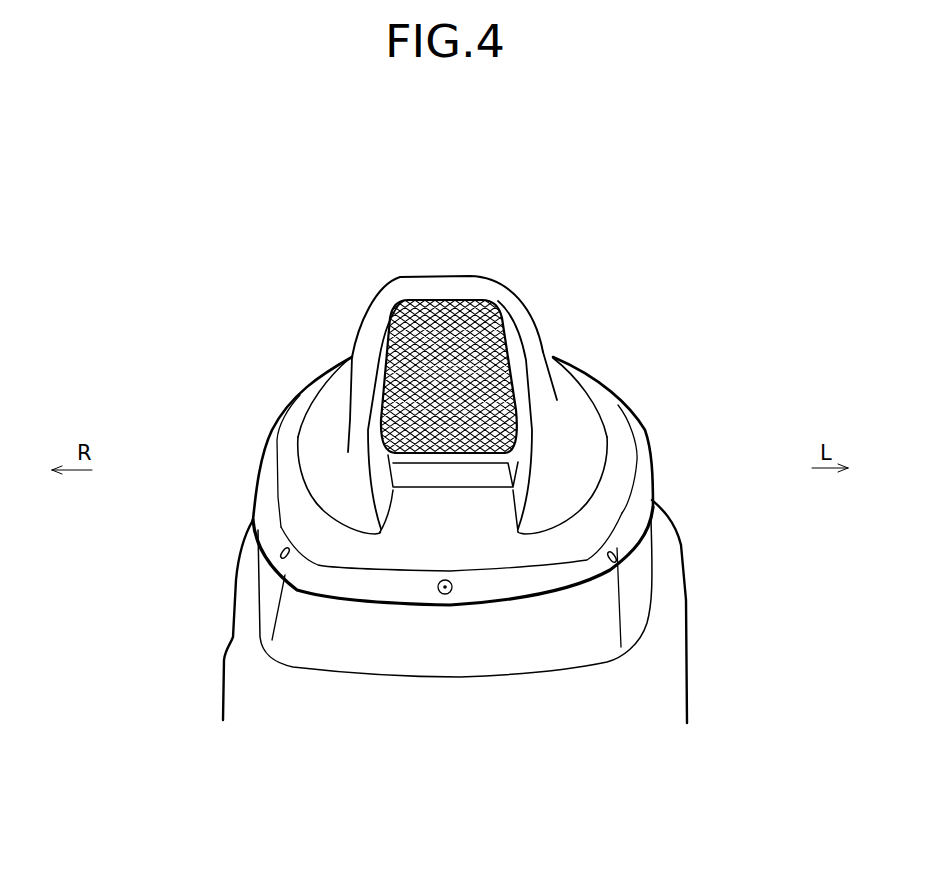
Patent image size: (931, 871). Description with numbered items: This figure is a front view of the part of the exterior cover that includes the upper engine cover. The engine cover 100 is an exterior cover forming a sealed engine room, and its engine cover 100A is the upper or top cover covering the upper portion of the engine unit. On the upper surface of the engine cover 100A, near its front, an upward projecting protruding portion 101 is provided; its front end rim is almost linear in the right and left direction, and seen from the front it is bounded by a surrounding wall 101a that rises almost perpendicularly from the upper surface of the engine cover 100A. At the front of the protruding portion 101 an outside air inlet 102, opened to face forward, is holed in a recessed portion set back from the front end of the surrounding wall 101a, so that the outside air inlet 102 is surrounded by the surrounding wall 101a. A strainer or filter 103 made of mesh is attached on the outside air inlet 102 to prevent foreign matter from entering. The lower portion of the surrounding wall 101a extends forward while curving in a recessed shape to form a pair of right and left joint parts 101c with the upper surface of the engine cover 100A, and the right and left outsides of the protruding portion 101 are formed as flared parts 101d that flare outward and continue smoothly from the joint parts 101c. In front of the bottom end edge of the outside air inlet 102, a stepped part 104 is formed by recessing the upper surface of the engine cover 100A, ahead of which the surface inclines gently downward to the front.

The engine cover 100 is at (665, 713).
The upper engine cover 100A is at (622, 415).
The protruding portion 101 is at (500, 290).
The surrounding wall 101a is at (546, 358).
The joint part 101c is at (350, 506).
The flared part 101d is at (323, 462).
The outside air inlet 102 is at (373, 407).
The strainer or filter 103 is at (394, 350).
The stepped part 104 is at (427, 472).